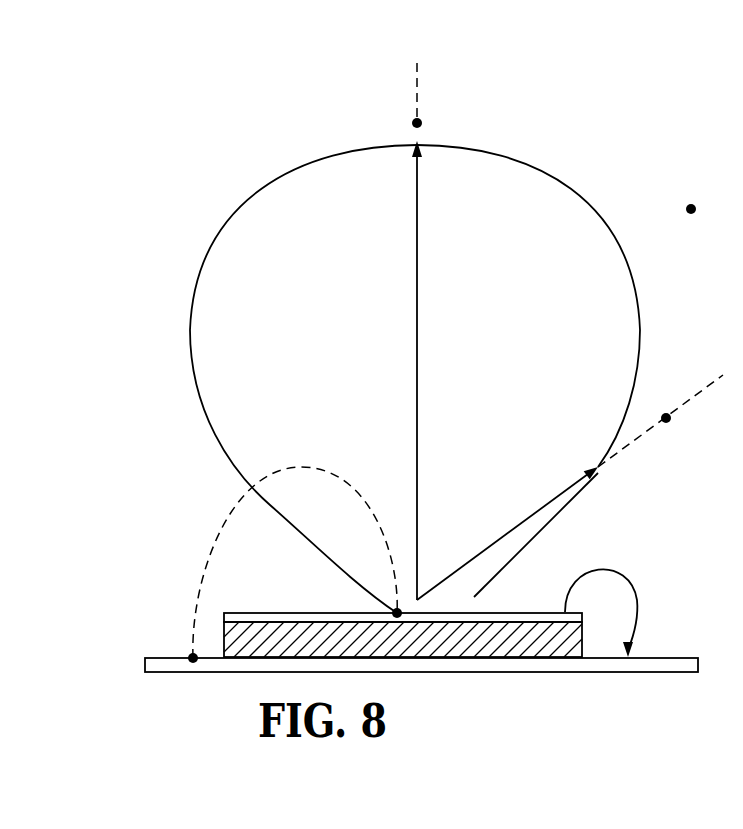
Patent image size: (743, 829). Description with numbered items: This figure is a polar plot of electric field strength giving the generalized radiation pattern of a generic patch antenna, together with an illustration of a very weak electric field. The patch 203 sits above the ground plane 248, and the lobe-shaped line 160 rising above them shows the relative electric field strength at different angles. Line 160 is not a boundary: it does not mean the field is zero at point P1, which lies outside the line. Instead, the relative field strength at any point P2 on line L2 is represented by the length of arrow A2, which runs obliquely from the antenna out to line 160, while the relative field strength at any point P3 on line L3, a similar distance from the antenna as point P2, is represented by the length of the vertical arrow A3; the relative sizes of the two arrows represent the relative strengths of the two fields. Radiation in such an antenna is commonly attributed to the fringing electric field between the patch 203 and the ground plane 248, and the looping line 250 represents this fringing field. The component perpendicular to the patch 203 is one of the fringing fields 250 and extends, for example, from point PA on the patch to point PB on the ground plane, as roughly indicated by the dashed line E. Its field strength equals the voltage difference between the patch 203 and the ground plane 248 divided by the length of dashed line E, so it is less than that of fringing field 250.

The line 160 is at (641, 307).
The patch 203 is at (530, 612).
The fringing field 250 is at (635, 583).
The ground plane 248 is at (665, 657).
The arrow A3 is at (417, 336).
The arrow A2 is at (522, 520).
The line L2 is at (632, 447).
The line L3 is at (414, 85).
The point P1 is at (691, 204).
The point P2 is at (666, 418).
The point P3 is at (417, 123).
The point PA is at (386, 598).
The point PB is at (174, 632).
The dashed line E is at (302, 450).